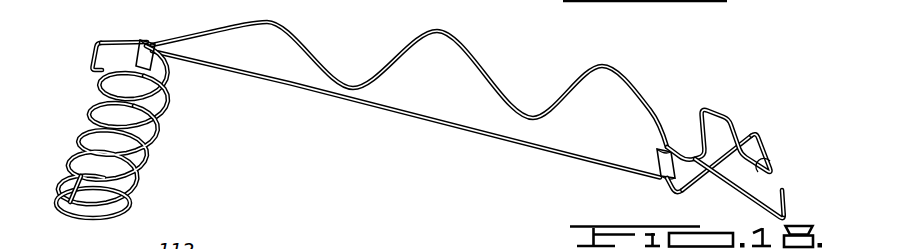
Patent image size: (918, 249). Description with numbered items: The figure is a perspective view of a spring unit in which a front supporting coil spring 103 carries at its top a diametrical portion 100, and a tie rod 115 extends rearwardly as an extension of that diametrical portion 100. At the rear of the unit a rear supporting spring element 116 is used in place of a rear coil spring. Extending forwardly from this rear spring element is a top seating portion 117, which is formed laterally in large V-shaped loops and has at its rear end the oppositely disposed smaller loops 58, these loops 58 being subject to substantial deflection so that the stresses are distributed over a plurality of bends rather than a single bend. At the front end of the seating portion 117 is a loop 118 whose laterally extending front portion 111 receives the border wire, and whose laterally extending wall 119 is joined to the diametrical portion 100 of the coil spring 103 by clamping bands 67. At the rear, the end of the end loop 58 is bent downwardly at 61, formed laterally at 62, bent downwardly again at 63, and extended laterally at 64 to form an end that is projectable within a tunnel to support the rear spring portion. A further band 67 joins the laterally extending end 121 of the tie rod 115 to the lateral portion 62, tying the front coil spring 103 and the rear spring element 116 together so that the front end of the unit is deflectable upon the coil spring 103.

The loop 58 is at (713, 108).
The downwardly bent portion 61 is at (703, 185).
The lateral portion 62 is at (669, 182).
The downward portion 63 is at (747, 200).
The lateral end 64 is at (786, 196).
The clamping band 67 is at (155, 43).
The diametrical portion 100 is at (167, 84).
The front coil spring 103 is at (155, 133).
The laterally extending front portion 111 is at (93, 58).
The tie rod 115 is at (443, 123).
The rear supporting spring element 116 is at (680, 197).
The top seating portion 117 is at (493, 80).
The loop 118 is at (116, 36).
The laterally extending wall 119 is at (117, 88).
The laterally extending end 121 is at (657, 148).